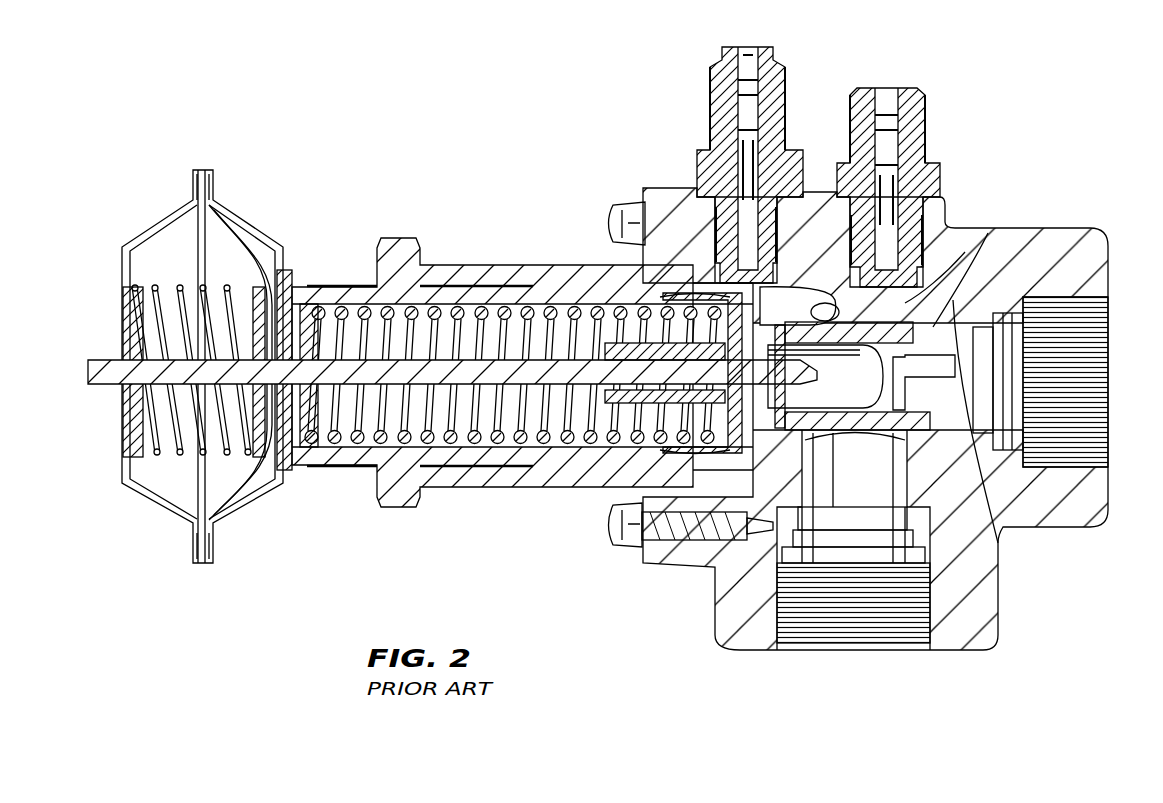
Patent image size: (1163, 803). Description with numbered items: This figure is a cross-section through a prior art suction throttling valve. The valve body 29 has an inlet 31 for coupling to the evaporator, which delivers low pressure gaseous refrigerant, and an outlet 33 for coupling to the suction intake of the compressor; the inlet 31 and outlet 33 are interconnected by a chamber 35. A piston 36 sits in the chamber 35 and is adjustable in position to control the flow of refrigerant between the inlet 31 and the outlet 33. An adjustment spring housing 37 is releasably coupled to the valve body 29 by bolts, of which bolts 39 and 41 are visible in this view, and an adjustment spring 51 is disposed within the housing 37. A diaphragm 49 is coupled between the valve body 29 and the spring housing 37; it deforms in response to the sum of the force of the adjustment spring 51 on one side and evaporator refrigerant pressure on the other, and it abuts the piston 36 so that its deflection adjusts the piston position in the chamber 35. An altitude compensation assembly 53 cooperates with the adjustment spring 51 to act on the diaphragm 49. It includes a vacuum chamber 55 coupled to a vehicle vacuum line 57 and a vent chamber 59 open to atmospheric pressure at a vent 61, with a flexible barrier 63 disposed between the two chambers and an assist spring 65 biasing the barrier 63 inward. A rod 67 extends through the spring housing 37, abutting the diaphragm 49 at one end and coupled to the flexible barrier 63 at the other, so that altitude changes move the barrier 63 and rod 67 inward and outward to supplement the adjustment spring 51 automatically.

The valve body 29 is at (1025, 512).
The inlet 31 is at (1104, 360).
The outlet 33 is at (805, 652).
The chamber 35 is at (1003, 543).
The piston 36 is at (1007, 233).
The adjustment spring housing 37 is at (493, 265).
The bolt 39 is at (615, 217).
The bolt 41 is at (613, 520).
The diaphragm 49 is at (728, 455).
The adjustment spring 51 is at (445, 330).
The altitude compensation assembly 53 is at (217, 353).
The vacuum chamber 55 is at (152, 243).
The vehicle vacuum line 57 is at (103, 392).
The vent chamber 59 is at (289, 253).
The vent 61 is at (262, 222).
The flexible barrier 63 is at (244, 470).
The assist spring 65 is at (170, 445).
The rod 67 is at (338, 318).